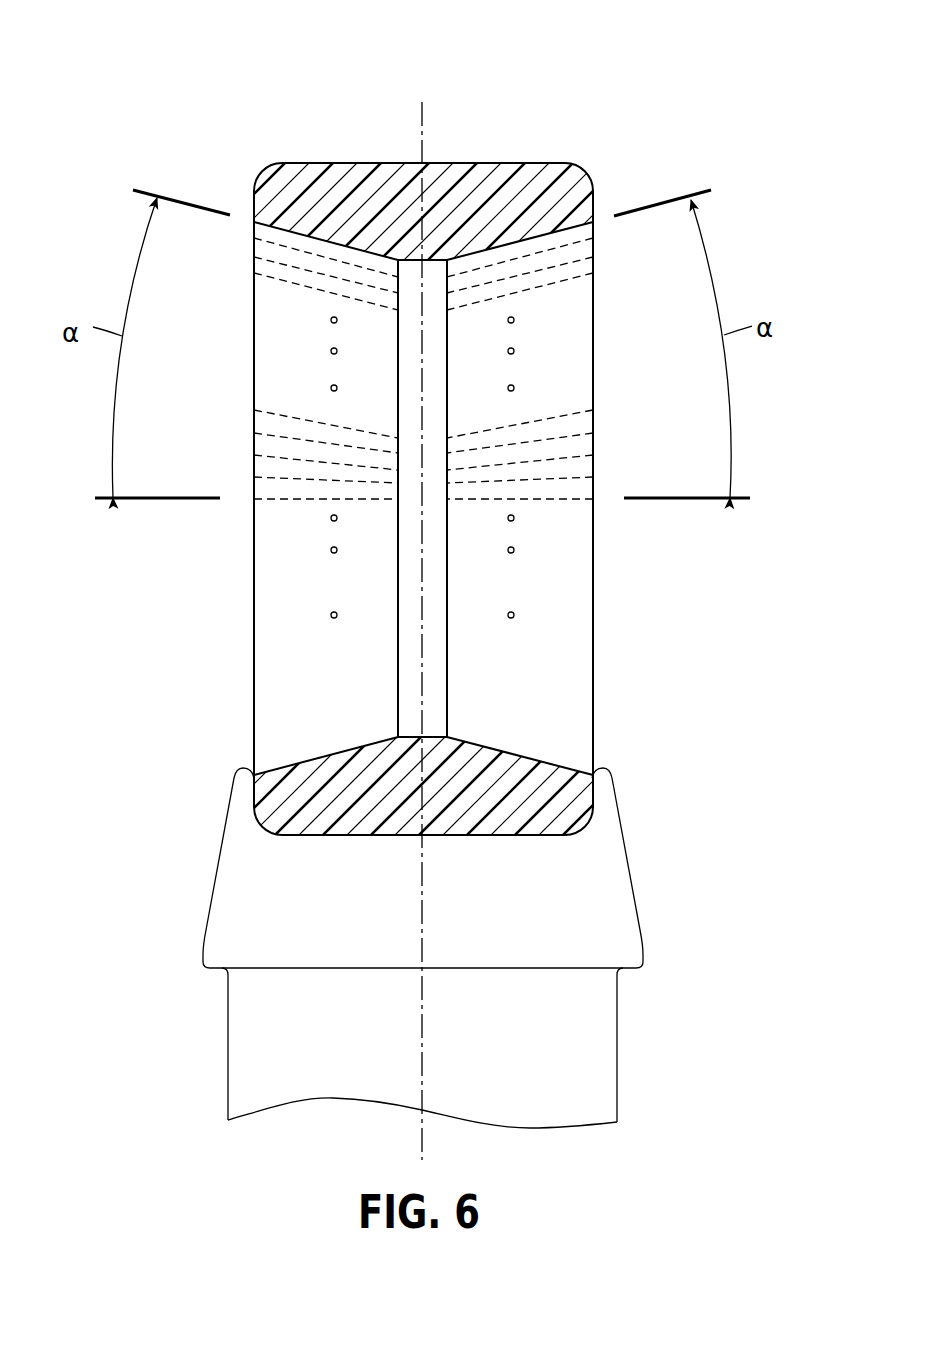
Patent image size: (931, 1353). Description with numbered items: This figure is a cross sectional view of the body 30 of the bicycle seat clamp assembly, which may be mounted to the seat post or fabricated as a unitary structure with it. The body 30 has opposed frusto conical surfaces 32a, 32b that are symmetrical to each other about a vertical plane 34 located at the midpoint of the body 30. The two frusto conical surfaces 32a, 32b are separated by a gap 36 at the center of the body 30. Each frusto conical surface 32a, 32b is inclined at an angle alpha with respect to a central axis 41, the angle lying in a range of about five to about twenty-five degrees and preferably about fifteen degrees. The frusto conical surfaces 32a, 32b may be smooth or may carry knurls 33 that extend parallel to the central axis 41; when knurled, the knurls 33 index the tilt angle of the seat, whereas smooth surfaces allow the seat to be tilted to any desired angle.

The body 30 is at (486, 142).
The frusto conical surface 32a is at (542, 584).
The frusto conical surface 32b is at (350, 584).
The knurls 33 is at (523, 462).
The vertical plane 34 is at (424, 1046).
The gap 36 is at (353, 369).
The central axis 41 is at (667, 501).